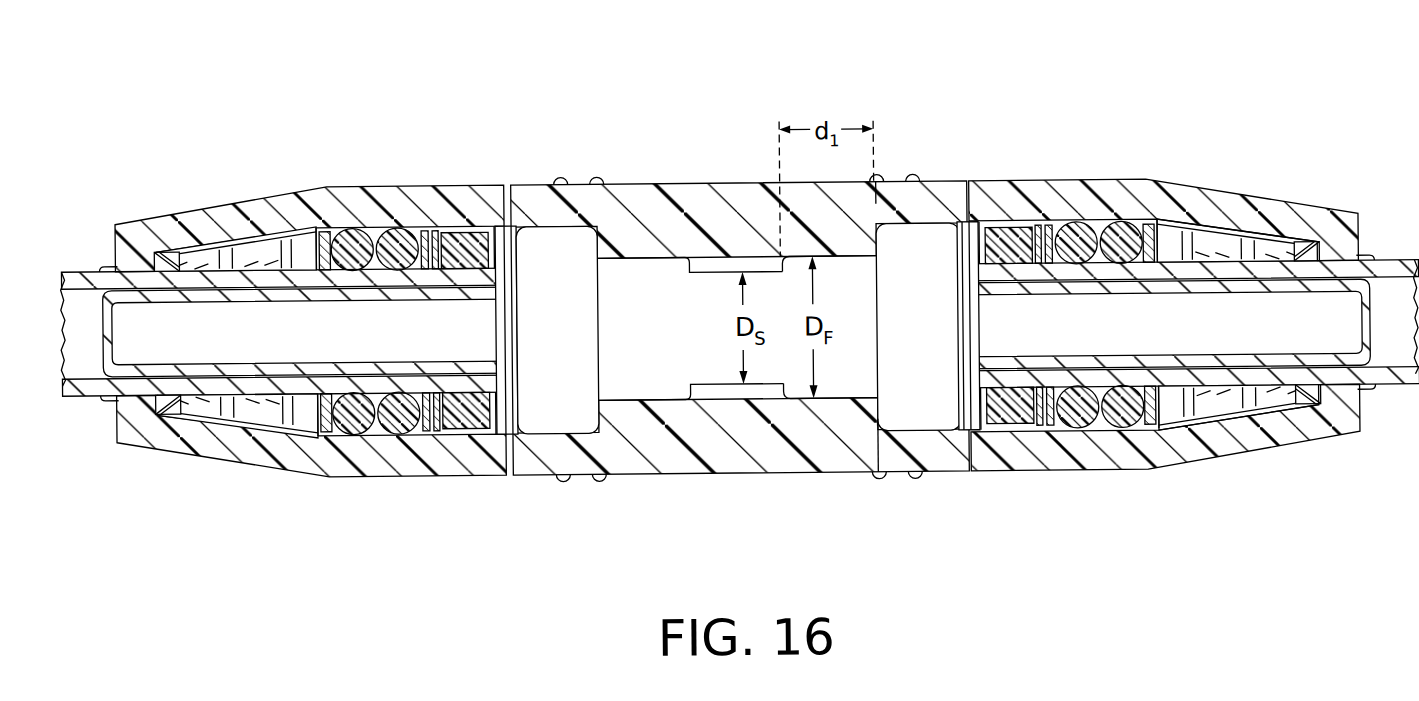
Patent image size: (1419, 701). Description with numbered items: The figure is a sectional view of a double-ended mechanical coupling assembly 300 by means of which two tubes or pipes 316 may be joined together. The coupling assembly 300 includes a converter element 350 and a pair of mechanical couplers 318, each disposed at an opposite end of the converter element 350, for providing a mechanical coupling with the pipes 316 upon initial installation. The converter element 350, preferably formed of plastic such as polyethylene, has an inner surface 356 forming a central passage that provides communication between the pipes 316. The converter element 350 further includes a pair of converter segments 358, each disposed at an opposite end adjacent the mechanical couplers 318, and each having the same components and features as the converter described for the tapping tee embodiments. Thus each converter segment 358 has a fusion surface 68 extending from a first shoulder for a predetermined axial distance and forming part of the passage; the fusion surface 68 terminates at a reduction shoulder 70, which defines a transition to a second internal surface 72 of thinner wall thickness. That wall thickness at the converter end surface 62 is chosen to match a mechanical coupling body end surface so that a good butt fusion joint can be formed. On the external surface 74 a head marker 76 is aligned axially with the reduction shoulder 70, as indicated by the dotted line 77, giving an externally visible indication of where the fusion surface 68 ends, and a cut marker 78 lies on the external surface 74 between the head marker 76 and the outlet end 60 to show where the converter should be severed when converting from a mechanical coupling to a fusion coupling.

The coupling assembly 300 is at (443, 62).
The converter element 350 is at (705, 106).
The head marker 76 is at (878, 176).
The cut marker 78 is at (912, 180).
The second internal surface 72 is at (895, 228).
The fusion surface 68 is at (848, 259).
The reduction shoulder 70 is at (880, 406).
The inner surface 356 is at (723, 275).
The pipes 316 is at (100, 394).
The mechanical couplers 318 is at (262, 461).
The converter segments 358 is at (619, 544).
The external surface 74 is at (760, 474).
The dotted line 77 is at (877, 446).
The outlet end 60 is at (940, 473).
The converter end surface 62 is at (990, 473).